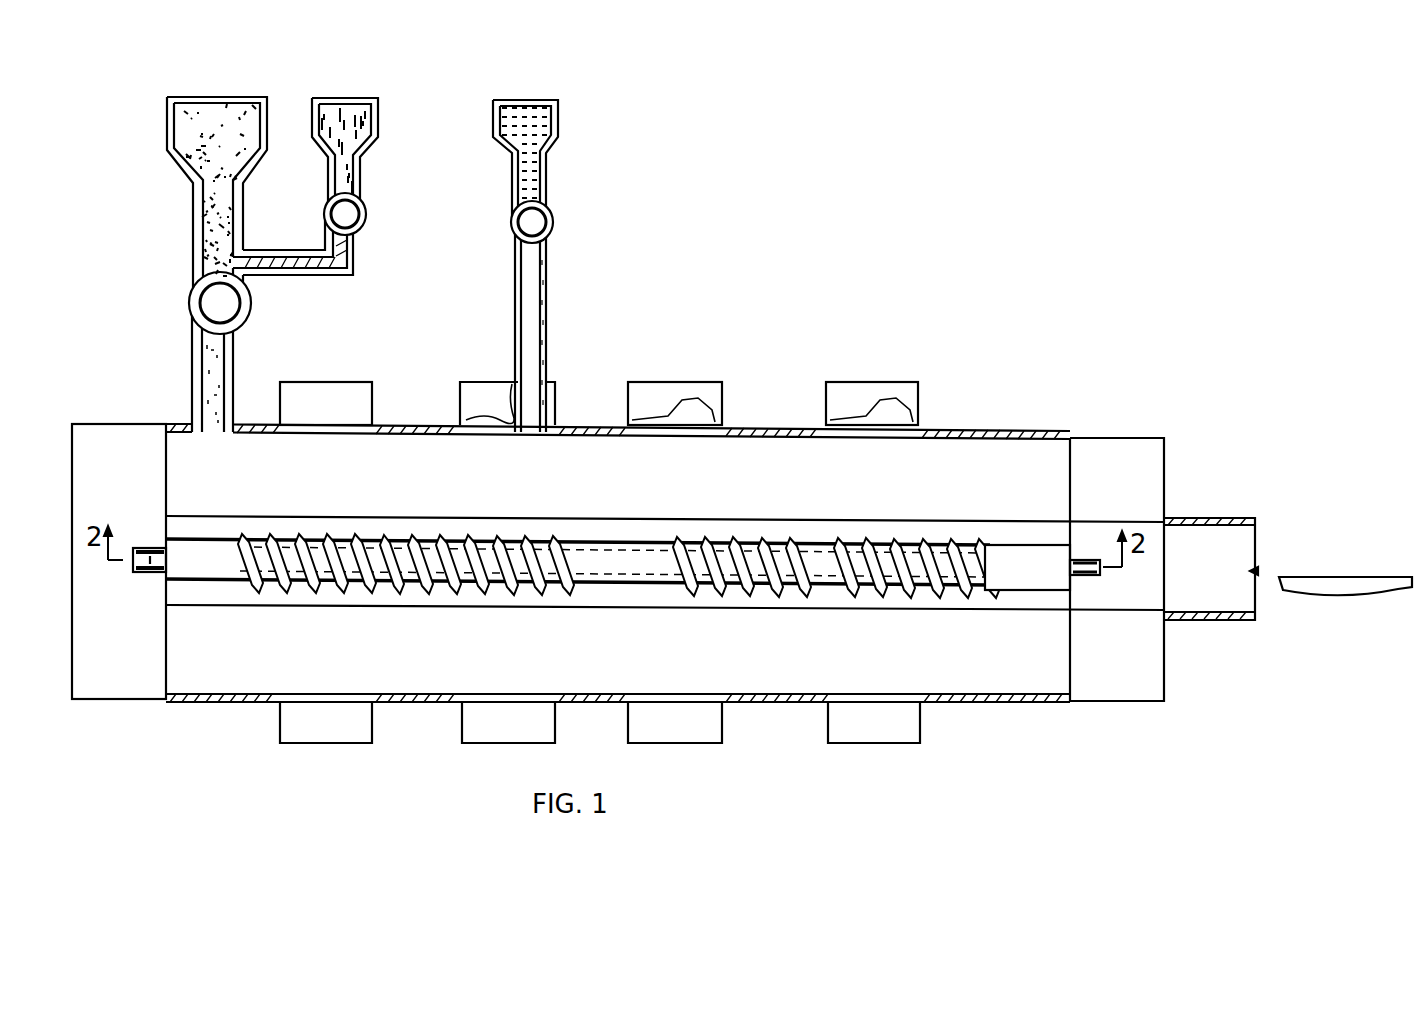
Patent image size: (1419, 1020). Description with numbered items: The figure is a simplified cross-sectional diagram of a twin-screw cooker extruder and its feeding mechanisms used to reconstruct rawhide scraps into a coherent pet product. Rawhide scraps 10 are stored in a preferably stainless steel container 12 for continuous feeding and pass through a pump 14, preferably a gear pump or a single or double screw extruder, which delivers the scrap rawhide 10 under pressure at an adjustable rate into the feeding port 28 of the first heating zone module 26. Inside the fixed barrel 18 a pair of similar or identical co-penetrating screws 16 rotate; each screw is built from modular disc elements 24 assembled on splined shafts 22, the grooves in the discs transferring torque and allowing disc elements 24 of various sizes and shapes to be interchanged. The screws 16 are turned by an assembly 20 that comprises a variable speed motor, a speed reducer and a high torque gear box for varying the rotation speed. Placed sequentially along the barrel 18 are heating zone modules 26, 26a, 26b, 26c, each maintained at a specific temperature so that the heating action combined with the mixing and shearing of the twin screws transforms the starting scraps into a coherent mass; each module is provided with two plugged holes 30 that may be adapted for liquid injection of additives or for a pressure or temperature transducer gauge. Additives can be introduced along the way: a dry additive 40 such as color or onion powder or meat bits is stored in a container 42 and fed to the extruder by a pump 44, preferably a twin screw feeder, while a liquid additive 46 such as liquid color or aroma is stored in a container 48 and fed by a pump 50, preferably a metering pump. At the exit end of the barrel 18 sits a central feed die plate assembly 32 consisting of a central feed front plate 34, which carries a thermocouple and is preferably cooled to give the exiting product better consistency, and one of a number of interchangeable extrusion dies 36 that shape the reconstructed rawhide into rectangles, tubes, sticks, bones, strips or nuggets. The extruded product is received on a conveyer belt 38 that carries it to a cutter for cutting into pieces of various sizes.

The rawhide scraps 10 is at (200, 108).
The container 12 is at (270, 108).
The pump 14 is at (250, 307).
The co-penetrating screws 16 is at (190, 565).
The barrel 18 is at (762, 702).
The assembly 20 is at (125, 433).
The shafts 22 is at (1032, 555).
The modular disc elements 24 is at (387, 537).
The heating zone module 26 is at (343, 419).
The heating zone module 26a is at (473, 400).
The heating zone module 26b is at (672, 419).
The heating zone module 26c is at (873, 419).
The feeding port 28 is at (215, 432).
The plugged holes 30 is at (900, 433).
The central feed die plate assembly 32 is at (1137, 497).
The central feed front plate 34 is at (1137, 675).
The extrusion die 36 is at (1265, 568).
The conveyer belt 38 is at (1312, 590).
The dry additive 40 is at (347, 110).
The container 42 is at (380, 118).
The pump 44 is at (363, 222).
The liquid additive 46 is at (528, 117).
The container 48 is at (560, 120).
The pump 50 is at (557, 222).